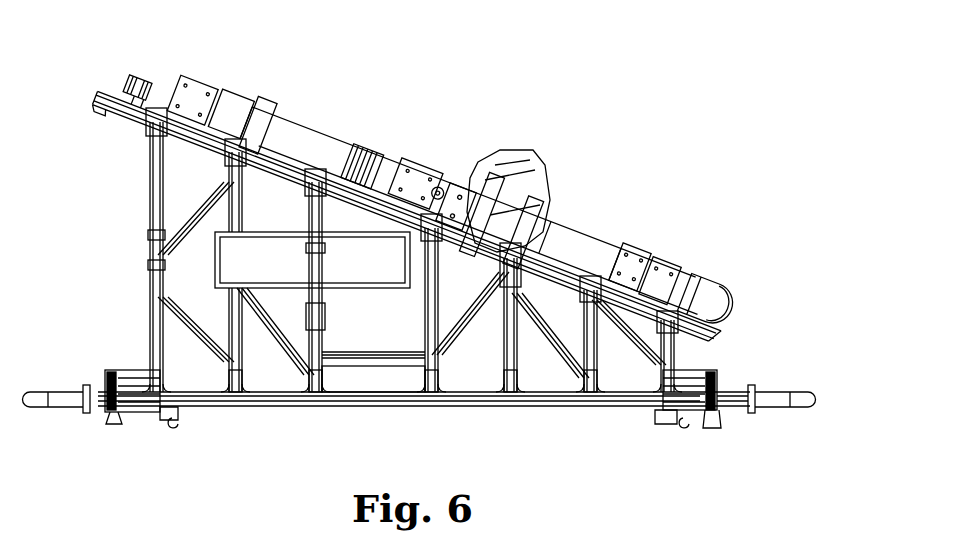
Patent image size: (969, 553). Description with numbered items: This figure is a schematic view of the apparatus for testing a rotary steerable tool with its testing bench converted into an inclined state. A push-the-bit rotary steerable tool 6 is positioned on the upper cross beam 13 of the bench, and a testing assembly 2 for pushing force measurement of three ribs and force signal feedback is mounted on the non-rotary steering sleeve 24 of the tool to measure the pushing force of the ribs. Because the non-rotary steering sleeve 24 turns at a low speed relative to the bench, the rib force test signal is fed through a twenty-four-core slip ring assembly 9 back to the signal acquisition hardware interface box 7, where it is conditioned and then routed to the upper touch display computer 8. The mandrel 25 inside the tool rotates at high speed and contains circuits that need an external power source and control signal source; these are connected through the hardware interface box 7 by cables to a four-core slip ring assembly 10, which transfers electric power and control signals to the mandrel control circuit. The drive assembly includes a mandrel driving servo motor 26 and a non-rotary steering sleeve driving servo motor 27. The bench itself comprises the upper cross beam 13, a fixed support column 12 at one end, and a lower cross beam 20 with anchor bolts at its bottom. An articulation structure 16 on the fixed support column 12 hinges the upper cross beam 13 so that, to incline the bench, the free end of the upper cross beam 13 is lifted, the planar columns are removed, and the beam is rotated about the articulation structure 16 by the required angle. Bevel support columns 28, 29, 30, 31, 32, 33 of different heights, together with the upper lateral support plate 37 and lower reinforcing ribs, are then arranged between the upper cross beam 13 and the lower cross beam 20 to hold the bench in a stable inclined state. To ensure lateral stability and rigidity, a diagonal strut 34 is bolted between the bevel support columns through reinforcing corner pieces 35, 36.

The testing assembly for pushing force measurement of three ribs of the rotary steer 2 is at (513, 157).
The push-the-bit rotary steerable tool 6 is at (575, 240).
The signal acquisition hardware interface box 7 is at (312, 392).
The upper touch display computer 8 is at (280, 250).
The 24-core slip ring assembly 9 is at (410, 165).
The 4-core slip ring assembly 10 is at (255, 105).
The fixed support column 12 is at (600, 385).
The upper cross beam 13 is at (453, 213).
The articulation structure 16 is at (672, 292).
The lower cross beam 20 is at (367, 397).
The non-rotary steering sleeve of rotary steerable tool 24 is at (438, 193).
The mandrel 25 is at (225, 105).
The mandrel driving servo motor 26 is at (123, 84).
The non-rotary steering sleeve driving servo motor 27 is at (352, 142).
The bevel support column 28 is at (517, 388).
The bevel support column 29 is at (437, 392).
The bevel support column 30 is at (345, 372).
The bevel support column 31 is at (238, 394).
The bevel support column 32 is at (167, 406).
The bevel support column 33 is at (88, 393).
The diagonal strut 34 is at (197, 217).
The reinforcing corner piece 35 is at (148, 235).
The reinforcing corner piece 36 is at (148, 265).
The upper lateral support plate 37 is at (592, 280).